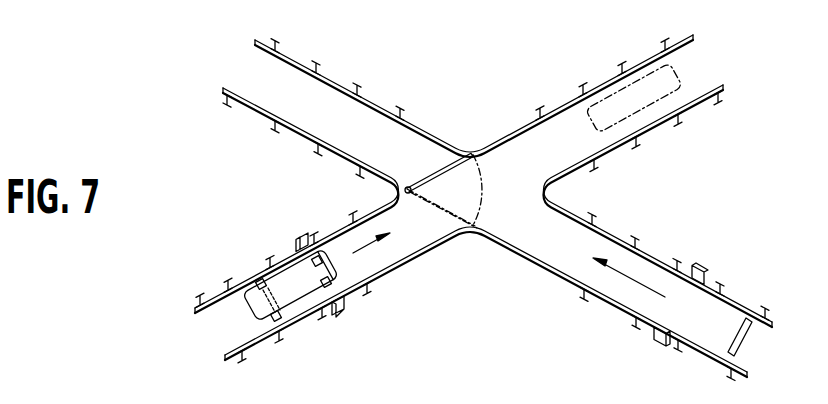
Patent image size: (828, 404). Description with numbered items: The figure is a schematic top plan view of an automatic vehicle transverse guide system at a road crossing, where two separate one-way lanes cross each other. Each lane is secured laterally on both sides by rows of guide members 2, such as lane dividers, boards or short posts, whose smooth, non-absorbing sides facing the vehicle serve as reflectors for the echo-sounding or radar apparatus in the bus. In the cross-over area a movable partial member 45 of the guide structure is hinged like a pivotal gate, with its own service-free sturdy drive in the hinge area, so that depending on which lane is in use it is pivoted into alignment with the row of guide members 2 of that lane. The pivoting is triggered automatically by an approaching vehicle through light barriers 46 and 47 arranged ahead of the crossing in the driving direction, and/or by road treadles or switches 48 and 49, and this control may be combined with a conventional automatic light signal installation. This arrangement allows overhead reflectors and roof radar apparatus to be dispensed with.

The guide members 2 is at (344, 158).
The movable partial member of guide structure 45 is at (438, 172).
The light barrier 46 is at (682, 279).
The light barrier 47 is at (299, 240).
The road treadle or switch 48 is at (748, 333).
The road treadle or switch 49 is at (285, 318).